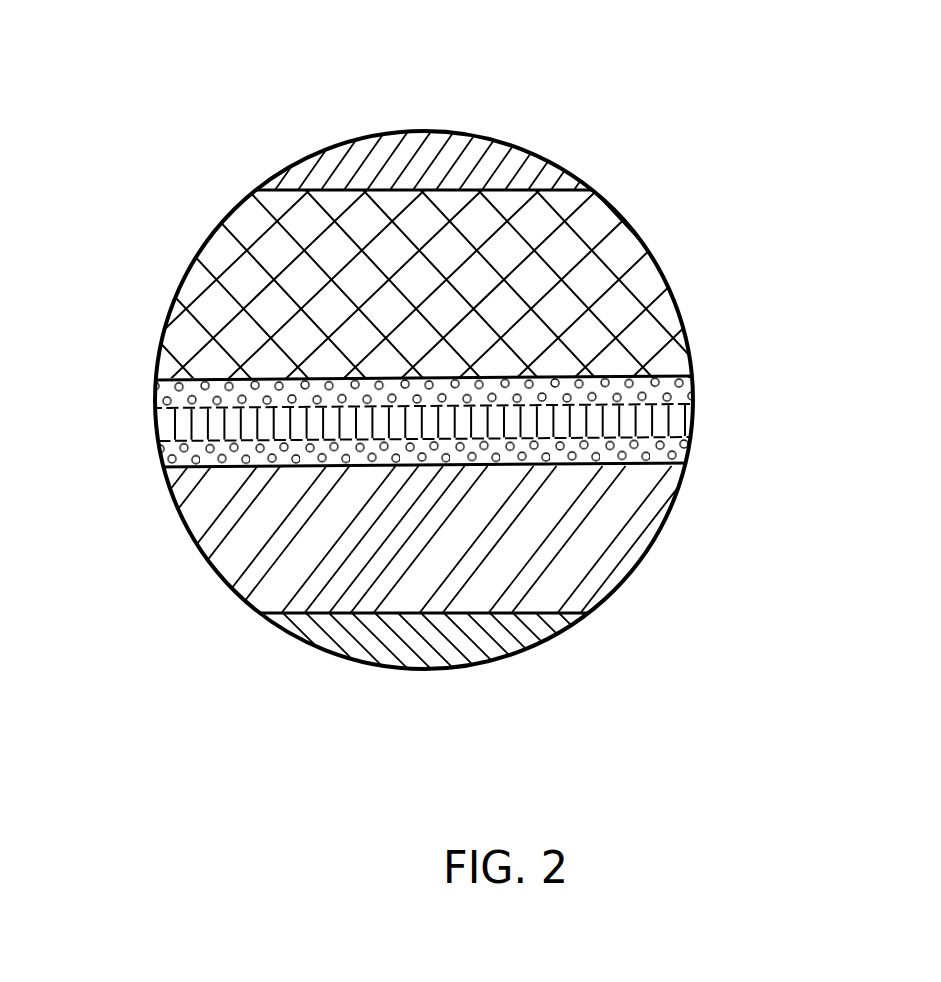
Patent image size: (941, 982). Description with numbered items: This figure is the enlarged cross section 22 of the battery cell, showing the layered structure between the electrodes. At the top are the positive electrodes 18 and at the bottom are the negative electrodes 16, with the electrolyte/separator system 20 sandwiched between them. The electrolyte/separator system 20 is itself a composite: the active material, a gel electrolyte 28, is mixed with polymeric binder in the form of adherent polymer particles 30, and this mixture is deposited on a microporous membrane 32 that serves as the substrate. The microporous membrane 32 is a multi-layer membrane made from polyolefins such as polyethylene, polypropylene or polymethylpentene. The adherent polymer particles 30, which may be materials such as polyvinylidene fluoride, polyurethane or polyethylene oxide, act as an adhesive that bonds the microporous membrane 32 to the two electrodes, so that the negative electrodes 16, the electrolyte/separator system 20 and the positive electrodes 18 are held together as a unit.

The enlarged cross section 22 is at (597, 172).
The positive electrodes 18 is at (148, 172).
The electrolyte/separator system 20 is at (148, 385).
The gel electrolyte 28 is at (692, 378).
The adherent polymer particles 30 is at (685, 393).
The microporous membrane 32 is at (660, 417).
The negative electrodes 16 is at (150, 488).